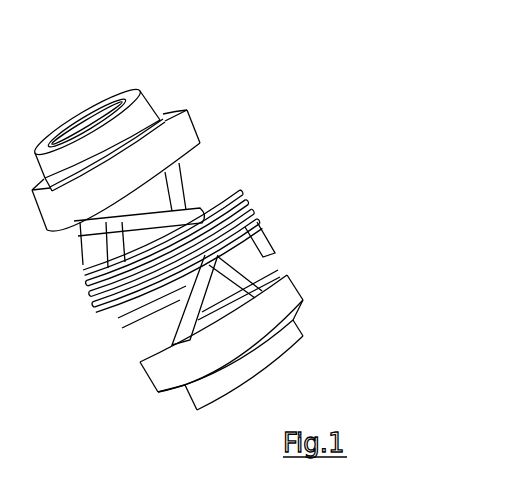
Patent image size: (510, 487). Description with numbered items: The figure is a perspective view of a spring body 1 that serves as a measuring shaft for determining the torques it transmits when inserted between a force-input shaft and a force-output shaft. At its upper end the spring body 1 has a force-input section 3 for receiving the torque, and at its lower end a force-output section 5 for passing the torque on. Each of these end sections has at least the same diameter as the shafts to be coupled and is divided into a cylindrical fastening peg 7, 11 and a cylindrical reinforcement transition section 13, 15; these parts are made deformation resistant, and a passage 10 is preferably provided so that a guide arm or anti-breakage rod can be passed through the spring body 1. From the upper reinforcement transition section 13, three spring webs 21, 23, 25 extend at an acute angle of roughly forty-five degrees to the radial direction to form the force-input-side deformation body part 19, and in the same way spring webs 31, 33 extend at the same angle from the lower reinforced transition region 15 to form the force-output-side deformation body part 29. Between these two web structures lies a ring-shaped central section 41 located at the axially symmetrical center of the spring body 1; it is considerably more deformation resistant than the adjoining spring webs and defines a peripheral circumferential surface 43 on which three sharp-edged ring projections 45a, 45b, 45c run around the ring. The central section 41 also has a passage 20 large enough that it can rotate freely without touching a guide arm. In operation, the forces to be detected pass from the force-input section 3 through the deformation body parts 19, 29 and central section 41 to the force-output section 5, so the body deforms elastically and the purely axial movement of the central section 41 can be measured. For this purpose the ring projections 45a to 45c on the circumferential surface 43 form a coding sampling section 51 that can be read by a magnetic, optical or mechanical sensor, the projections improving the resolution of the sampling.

The spring body 1 is at (280, 181).
The force-input section 3 is at (180, 100).
The force-output section 5 is at (185, 393).
The fastening peg 7 is at (140, 107).
The passage 10 is at (83, 118).
The fastening peg 11 is at (292, 340).
The reinforcement transition section 13 is at (180, 133).
The reinforcement transition section 15 is at (292, 290).
The force-input-side deformation body part 19 is at (208, 165).
The passage 20 is at (142, 245).
The spring web 21 is at (199, 187).
The spring web 23 is at (142, 228).
The spring web 25 is at (93, 243).
The force-output-side deformation body part 29 is at (274, 248).
The spring web 31 is at (265, 263).
The spring web 33 is at (182, 328).
The central section 41 is at (258, 230).
The peripheral circumferential surface 43 is at (252, 190).
The ring projection 45a is at (80, 290).
The ring projection 45b is at (83, 300).
The ring projection 45c is at (92, 310).
The coding sampling section 51 is at (253, 184).